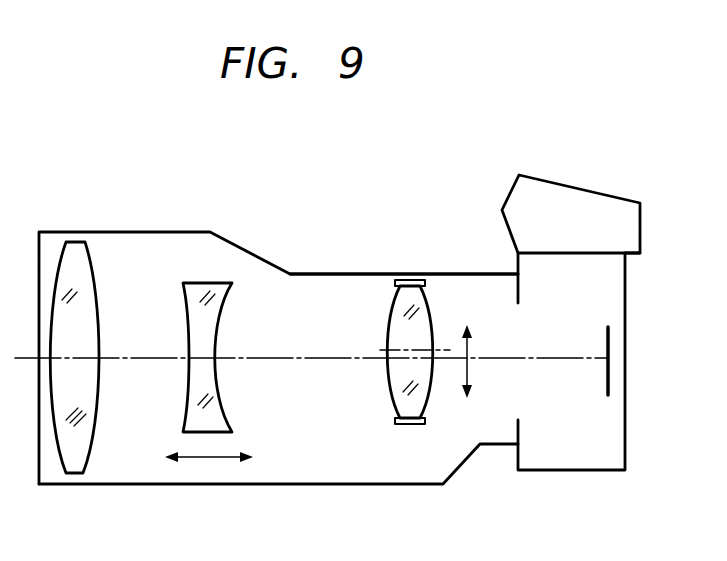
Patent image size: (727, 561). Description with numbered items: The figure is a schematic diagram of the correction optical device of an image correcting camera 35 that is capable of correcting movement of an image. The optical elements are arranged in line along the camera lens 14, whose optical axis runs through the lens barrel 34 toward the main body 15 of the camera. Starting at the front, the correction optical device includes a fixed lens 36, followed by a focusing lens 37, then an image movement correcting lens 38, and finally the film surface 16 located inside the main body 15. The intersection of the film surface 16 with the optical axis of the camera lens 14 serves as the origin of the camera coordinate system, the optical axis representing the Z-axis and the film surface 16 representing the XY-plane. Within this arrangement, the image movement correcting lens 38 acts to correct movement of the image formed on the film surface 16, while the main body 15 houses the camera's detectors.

The camera lens 14 is at (328, 274).
The main body 15 is at (626, 450).
The film surface 16 is at (612, 388).
The photographing lens unit 34 is at (225, 229).
The image correcting camera 35 is at (620, 192).
The fixed lens 36 is at (75, 476).
The focusing lens 37 is at (217, 434).
The image movement correcting lens 38 is at (395, 398).